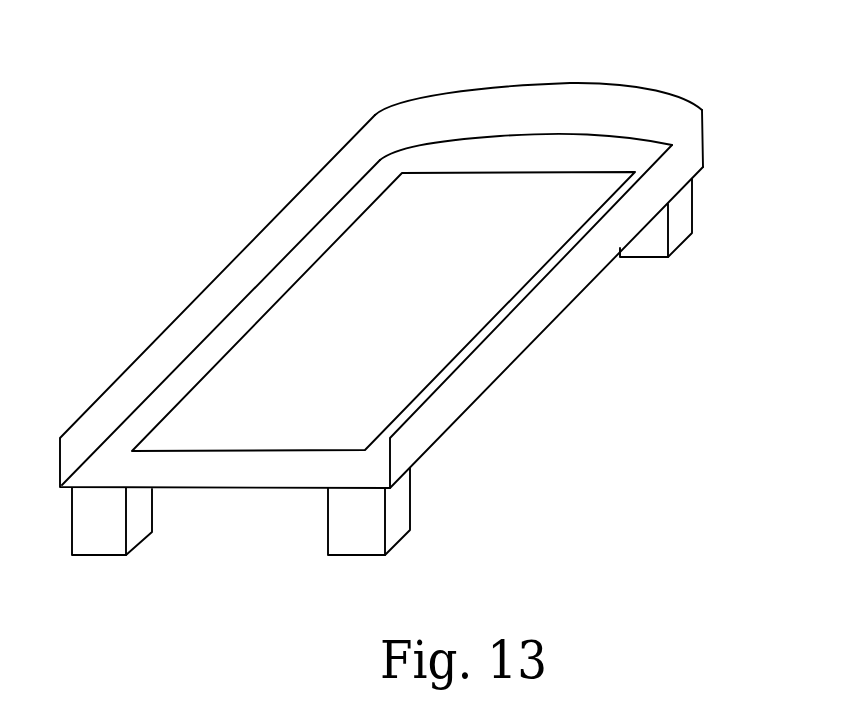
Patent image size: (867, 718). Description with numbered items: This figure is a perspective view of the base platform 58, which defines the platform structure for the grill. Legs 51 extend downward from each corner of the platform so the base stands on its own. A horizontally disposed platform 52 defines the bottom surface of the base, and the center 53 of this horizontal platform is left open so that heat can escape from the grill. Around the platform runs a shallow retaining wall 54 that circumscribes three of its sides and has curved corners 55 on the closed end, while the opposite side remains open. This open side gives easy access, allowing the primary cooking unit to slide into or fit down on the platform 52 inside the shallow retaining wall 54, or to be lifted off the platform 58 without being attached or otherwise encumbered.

The legs 51 is at (398, 508).
The horizontally disposed platform 52 is at (240, 470).
The center of the horizontal platform 53 is at (470, 280).
The retaining wall 54 is at (608, 108).
The curved corners 55 is at (696, 107).
The base platform 58 is at (196, 171).